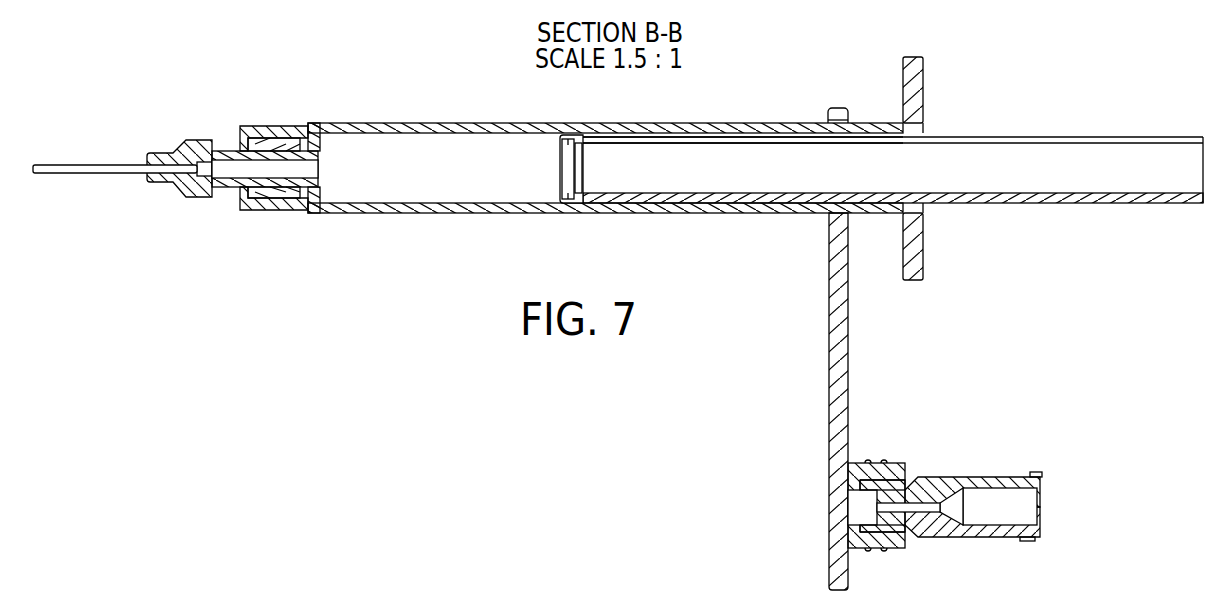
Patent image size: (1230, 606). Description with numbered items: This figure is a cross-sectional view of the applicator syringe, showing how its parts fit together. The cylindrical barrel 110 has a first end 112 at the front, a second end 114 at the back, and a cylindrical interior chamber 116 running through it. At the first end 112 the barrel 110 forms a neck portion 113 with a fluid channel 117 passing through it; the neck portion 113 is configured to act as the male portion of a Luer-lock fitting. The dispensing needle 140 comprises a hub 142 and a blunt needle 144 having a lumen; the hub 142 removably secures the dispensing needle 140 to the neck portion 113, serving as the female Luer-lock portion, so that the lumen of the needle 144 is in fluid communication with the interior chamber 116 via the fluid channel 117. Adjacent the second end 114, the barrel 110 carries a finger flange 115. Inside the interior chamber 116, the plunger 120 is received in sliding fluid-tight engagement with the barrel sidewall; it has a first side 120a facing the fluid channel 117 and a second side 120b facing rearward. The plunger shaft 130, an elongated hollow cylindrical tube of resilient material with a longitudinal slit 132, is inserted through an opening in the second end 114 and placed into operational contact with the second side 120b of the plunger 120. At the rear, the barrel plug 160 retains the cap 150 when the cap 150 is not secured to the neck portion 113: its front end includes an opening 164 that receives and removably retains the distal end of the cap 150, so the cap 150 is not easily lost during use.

The barrel 110 is at (453, 128).
The first end 112 is at (352, 128).
The neck portion 113 is at (242, 185).
The second end 114 is at (878, 128).
The finger flange 115 is at (917, 90).
The interior chamber 116 is at (438, 202).
The fluid channel 117 is at (268, 172).
The plunger 120 is at (567, 178).
The first side 120a is at (562, 160).
The second side 120b is at (583, 160).
The plunger shaft 130 is at (1002, 198).
The longitudinal slit 132 is at (755, 138).
The dispensing needle 140 is at (200, 152).
The hub 142 is at (290, 143).
The blunt needle 144 is at (82, 165).
The cap 150 is at (977, 485).
The barrel plug 160 is at (843, 518).
The opening 164 is at (897, 491).